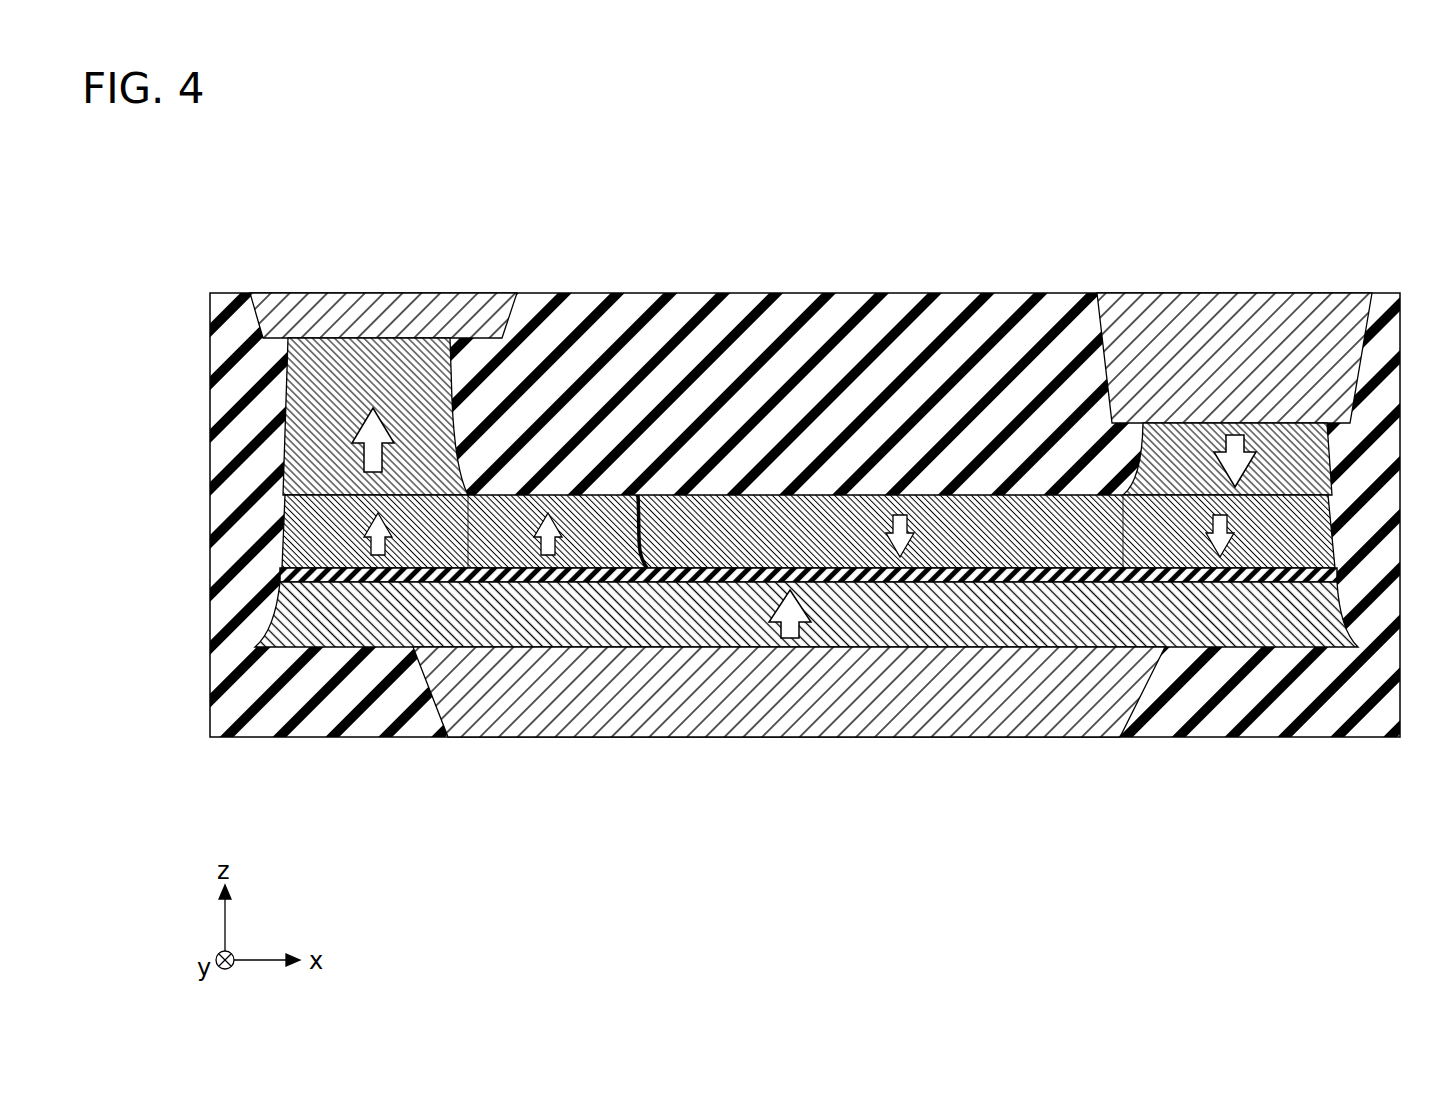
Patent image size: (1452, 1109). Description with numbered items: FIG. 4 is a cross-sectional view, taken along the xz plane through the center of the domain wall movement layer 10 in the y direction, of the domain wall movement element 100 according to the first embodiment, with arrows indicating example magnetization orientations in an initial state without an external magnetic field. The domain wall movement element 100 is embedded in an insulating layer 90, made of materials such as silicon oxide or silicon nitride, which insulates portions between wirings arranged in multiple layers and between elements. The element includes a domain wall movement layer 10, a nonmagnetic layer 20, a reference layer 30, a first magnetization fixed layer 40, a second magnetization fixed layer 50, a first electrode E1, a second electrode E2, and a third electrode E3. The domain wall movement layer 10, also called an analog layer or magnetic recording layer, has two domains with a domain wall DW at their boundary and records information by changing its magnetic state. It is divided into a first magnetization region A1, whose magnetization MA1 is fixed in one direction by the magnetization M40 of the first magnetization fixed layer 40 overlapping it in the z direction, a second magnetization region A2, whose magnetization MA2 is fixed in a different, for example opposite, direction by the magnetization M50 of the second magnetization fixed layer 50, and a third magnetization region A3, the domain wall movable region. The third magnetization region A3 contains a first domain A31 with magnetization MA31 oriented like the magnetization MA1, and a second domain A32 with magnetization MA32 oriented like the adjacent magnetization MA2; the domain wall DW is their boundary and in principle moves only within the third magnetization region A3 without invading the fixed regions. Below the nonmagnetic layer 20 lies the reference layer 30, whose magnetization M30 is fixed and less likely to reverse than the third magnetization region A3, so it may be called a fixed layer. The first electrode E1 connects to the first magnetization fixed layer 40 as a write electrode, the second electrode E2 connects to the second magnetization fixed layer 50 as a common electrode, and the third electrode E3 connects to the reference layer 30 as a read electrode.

The domain wall movement element 100 is at (1110, 188).
The insulating layer 90 is at (950, 313).
The first electrode E1 is at (297, 318).
The second electrode E2 is at (1340, 350).
The third electrode E3 is at (740, 714).
The first magnetization fixed layer 40 is at (285, 458).
The magnetization of the first magnetization fixed layer M40 is at (315, 445).
The second magnetization fixed layer 50 is at (1300, 490).
The magnetization of the second magnetization fixed layer M50 is at (1235, 465).
The domain wall movement layer 10 is at (285, 545).
The nonmagnetic layer 20 is at (287, 568).
The reference layer 30 is at (290, 628).
The magnetization of the reference layer M30 is at (792, 632).
The domain wall DW is at (642, 560).
The first magnetization region A1 is at (339, 576).
The magnetization of the first magnetization region MA1 is at (393, 555).
The second magnetization region A2 is at (1178, 584).
The magnetization of the second magnetization region MA2 is at (1220, 558).
The third magnetization region A3 is at (699, 578).
The first domain A31 is at (503, 545).
The magnetization of the first domain MA31 is at (557, 545).
The second domain A32 is at (1012, 540).
The magnetization of the second domain MA32 is at (883, 562).